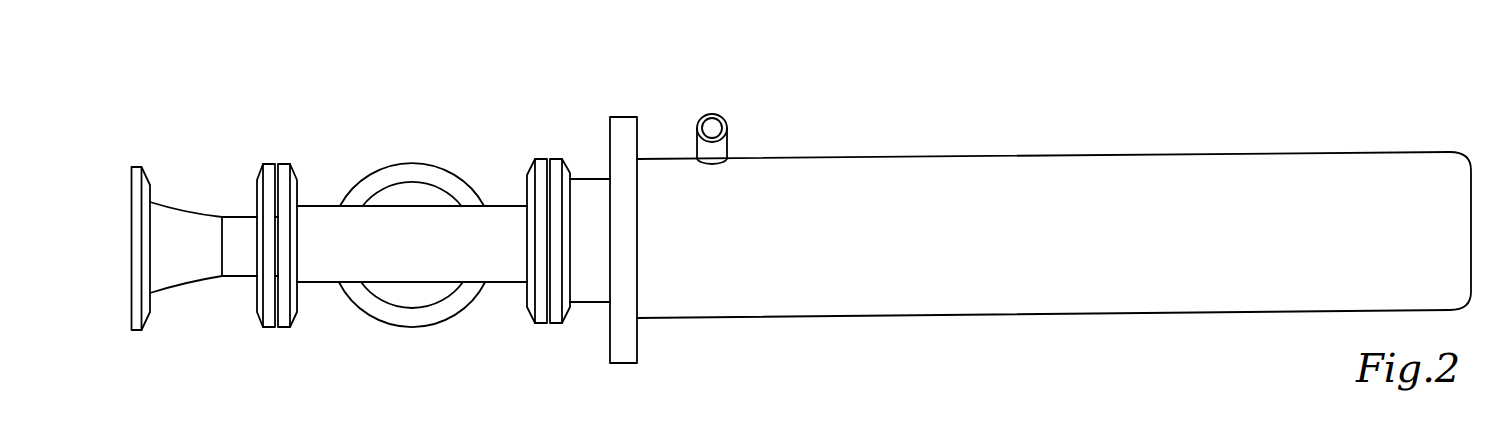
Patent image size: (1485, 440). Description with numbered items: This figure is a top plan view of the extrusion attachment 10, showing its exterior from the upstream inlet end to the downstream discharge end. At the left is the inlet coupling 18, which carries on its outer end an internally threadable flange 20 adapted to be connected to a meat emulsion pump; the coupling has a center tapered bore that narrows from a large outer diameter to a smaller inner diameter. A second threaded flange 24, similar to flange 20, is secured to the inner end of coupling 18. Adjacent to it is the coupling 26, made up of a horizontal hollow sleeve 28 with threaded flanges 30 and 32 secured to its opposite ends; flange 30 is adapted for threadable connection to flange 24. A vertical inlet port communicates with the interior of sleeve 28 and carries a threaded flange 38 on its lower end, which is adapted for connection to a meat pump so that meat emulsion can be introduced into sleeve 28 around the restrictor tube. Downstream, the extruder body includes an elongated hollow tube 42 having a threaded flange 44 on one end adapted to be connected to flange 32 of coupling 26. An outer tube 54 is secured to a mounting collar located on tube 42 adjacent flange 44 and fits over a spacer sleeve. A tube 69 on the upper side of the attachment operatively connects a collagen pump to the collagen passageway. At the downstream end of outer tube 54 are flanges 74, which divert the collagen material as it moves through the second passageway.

The extrusion attachment 10 is at (1320, 67).
The inlet coupling 18 is at (178, 291).
The internally threadable flange 20 is at (143, 169).
The second threaded flange 24 is at (262, 168).
The coupling 26 is at (420, 200).
The horizontal hollow sleeve 28 is at (312, 284).
The threaded flange 30 is at (295, 166).
The threaded flange 32 is at (535, 163).
The threaded flange 38 is at (412, 322).
The elongated hollow tube 42 is at (585, 304).
The threaded flange 44 is at (560, 158).
The outer tube 54 is at (1030, 155).
The tube 69 is at (715, 114).
The flanges 74 is at (1471, 172).